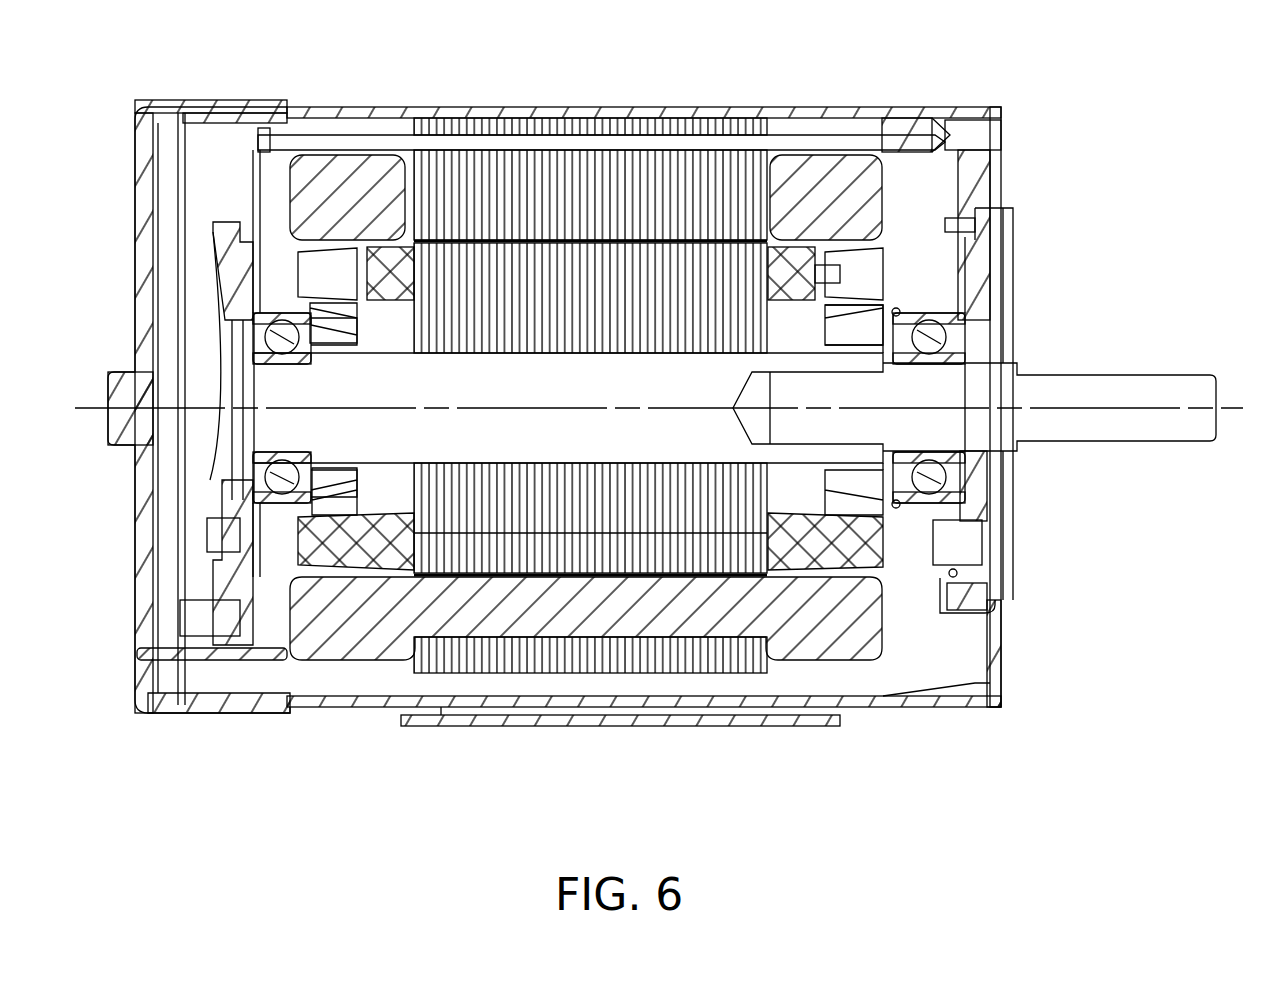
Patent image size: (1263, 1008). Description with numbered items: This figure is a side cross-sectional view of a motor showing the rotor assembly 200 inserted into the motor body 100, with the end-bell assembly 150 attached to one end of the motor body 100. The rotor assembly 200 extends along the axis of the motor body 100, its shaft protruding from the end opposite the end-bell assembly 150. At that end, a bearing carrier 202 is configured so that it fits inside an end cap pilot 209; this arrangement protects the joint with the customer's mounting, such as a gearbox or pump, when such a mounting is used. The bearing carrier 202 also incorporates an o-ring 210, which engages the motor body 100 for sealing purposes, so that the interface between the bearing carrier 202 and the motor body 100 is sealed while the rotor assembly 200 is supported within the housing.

The motor body 100 is at (659, 423).
The end-bell assembly 150 is at (262, 770).
The rotor assembly 200 is at (1043, 289).
The bearing carrier 202 is at (1012, 515).
The end cap pilot 209 is at (988, 600).
The o-ring 210 is at (960, 572).